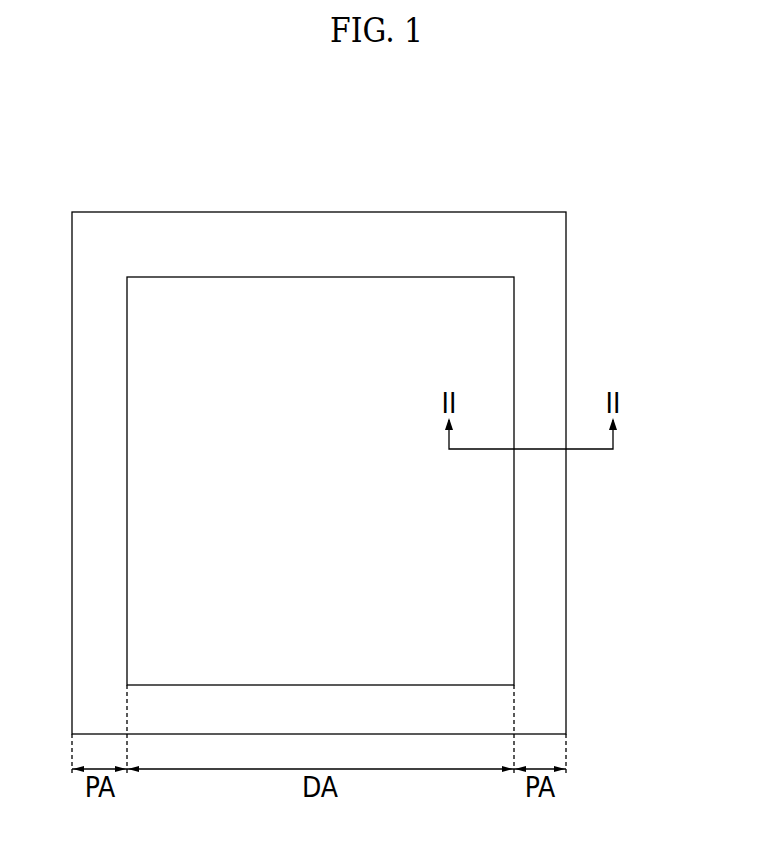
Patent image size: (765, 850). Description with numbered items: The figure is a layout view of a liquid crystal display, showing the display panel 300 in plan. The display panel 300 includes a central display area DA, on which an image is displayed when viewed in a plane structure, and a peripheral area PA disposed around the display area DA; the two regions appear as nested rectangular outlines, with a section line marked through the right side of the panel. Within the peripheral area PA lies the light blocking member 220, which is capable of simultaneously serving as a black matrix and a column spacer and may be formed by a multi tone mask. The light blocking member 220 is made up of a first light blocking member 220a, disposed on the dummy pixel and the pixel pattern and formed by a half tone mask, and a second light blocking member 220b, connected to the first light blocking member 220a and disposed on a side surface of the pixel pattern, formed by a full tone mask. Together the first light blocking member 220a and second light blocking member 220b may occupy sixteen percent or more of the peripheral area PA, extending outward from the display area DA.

The display panel 300 is at (458, 200).
The light blocking member 220 is at (647, 510).
The first light blocking member 220a is at (510, 519).
The second light blocking member 220b is at (552, 575).